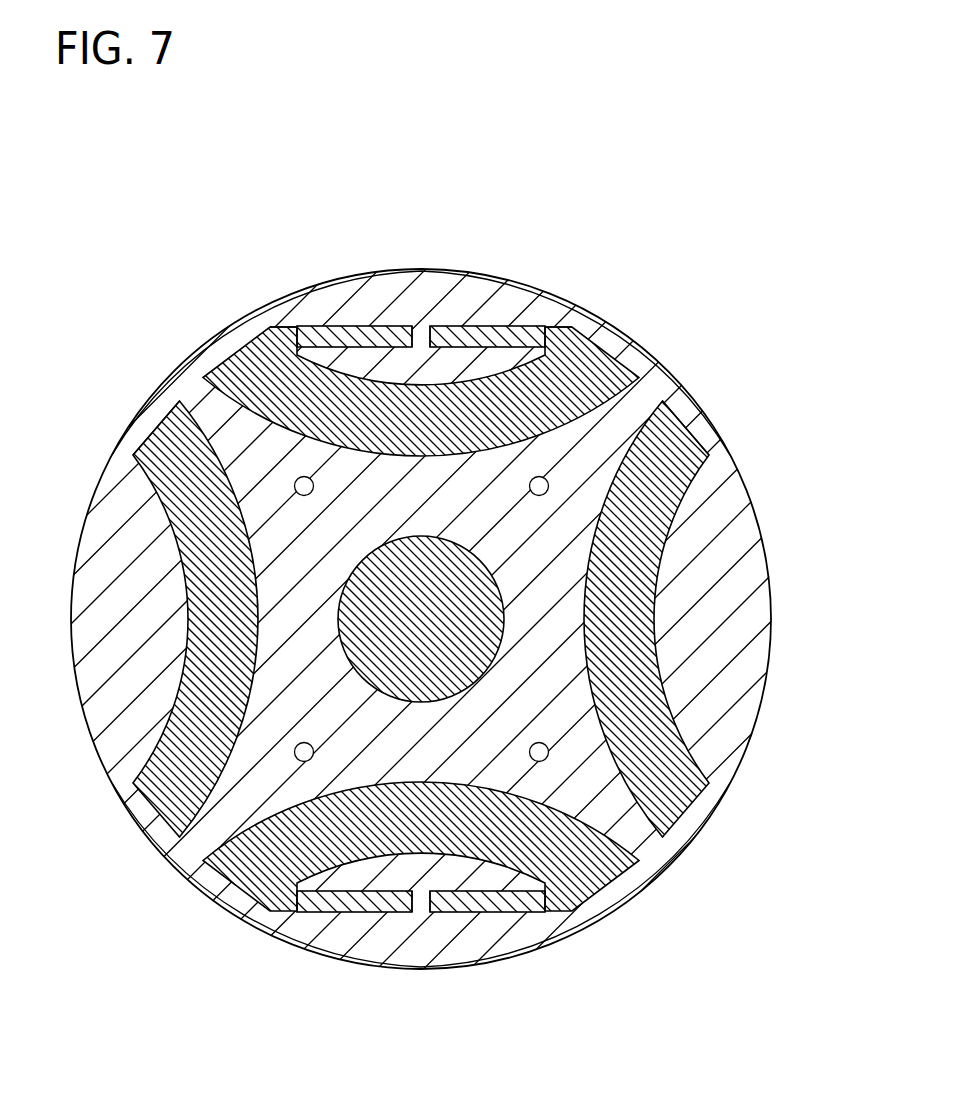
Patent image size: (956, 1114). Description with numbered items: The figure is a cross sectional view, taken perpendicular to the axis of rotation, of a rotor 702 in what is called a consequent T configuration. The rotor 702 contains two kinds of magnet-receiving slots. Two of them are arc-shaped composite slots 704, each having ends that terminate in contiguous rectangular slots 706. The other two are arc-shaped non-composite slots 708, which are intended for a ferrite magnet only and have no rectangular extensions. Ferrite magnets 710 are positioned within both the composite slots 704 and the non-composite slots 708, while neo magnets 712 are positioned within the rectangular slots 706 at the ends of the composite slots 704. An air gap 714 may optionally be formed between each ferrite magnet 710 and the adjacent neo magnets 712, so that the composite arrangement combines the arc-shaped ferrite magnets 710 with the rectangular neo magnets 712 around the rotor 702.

The rotor 702 is at (618, 330).
The arc shaped composite slot 704 is at (650, 352).
The rectangular slot 706 is at (453, 326).
The arc shaped non-composite slot 708 is at (158, 420).
The ferrite magnet 710 is at (215, 537).
The neo magnet 712 is at (334, 327).
The air gap 714 is at (281, 333).